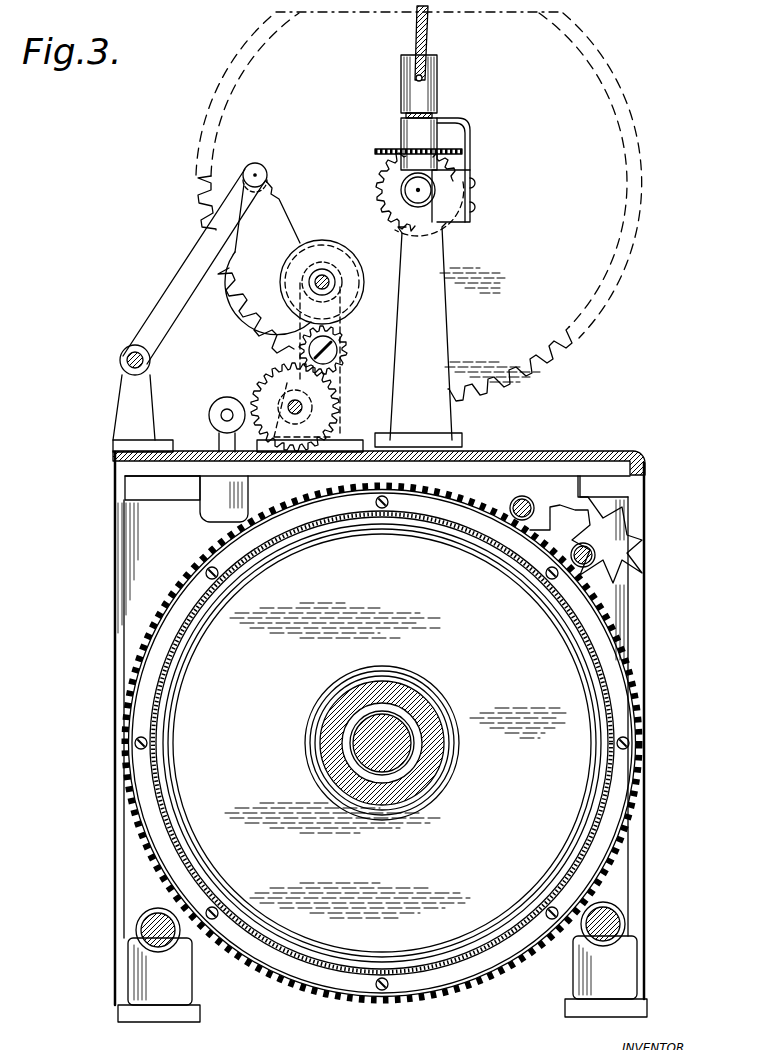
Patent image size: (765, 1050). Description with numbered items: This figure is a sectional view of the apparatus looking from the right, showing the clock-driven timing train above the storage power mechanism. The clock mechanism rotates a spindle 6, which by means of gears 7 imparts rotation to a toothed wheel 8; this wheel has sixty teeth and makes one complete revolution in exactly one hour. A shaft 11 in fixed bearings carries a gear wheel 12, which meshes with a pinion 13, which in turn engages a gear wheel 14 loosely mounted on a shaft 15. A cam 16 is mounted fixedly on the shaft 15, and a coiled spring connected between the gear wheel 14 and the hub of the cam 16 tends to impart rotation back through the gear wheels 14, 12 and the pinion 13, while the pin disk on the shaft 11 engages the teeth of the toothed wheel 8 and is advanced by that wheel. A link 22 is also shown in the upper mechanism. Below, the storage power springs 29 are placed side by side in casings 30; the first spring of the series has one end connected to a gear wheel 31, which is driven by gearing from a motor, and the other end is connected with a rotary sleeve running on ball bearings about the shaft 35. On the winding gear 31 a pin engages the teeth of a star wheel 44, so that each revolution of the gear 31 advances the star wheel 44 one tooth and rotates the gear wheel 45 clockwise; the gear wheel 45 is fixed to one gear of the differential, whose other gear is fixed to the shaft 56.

The spindle 6 is at (428, 30).
The gears 7 is at (380, 158).
The toothed wheel 8 is at (576, 347).
The shaft 11 is at (302, 408).
The gear wheel 12 is at (258, 386).
The pinion 13 is at (350, 341).
The gear wheel 14 is at (359, 294).
The shaft 15 is at (338, 280).
The cam 16 is at (268, 221).
The link 22 is at (178, 276).
The springs 29 is at (433, 688).
The casings 30 is at (467, 958).
The gear wheel 31 is at (630, 814).
The shaft 35 is at (392, 748).
The star wheel 44 is at (632, 550).
The gear wheel 45 is at (553, 476).
The shaft 56 is at (515, 514).